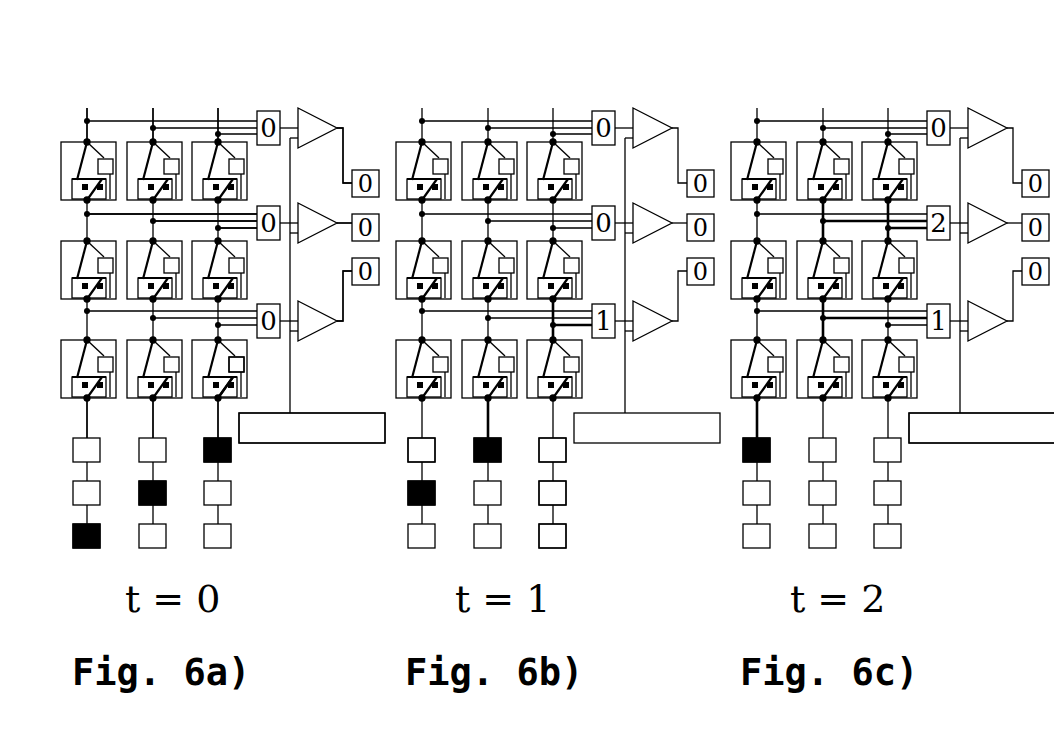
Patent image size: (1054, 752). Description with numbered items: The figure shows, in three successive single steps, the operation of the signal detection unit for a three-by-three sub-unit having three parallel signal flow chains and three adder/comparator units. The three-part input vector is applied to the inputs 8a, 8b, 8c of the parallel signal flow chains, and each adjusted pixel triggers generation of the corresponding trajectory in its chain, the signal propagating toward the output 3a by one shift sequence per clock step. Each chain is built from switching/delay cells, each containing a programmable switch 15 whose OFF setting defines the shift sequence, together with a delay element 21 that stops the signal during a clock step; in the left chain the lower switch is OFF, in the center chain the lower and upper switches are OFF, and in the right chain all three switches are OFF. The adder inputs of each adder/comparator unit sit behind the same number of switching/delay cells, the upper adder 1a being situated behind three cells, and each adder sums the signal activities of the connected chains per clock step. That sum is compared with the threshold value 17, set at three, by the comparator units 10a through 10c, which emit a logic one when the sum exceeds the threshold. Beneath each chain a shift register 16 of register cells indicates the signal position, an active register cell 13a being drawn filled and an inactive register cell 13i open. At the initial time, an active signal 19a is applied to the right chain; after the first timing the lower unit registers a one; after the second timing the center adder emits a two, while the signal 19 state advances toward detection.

In FIG. 6A, the output of the left signal flow chain 3a is at (217, 106).
In FIG. 6A, the upper adder 1a is at (288, 215).
In FIG. 6A, the upper comparator unit 10a is at (346, 208).
In FIG. 6A, the lower comparator unit 10c is at (344, 296).
In FIG. 6A, the input of the left signal flow chain 8a is at (68, 418).
In FIG. 6A, the input of the center signal flow chain 8b is at (143, 418).
In FIG. 6A, the input of the right signal flow chain 8c is at (208, 418).
In FIG. 6A, the delay element 21 is at (253, 362).
In FIG. 6A, the programmable switch 15 is at (243, 373).
In FIG. 6A, the threshold value 17 is at (312, 428).
In FIG. 6A, the active register cell 13a is at (108, 540).
In FIG. 6B, the inactive register cell 13i is at (386, 474).
In FIG. 6B, the shift register 16 is at (588, 493).
In FIG. 6C, the active signal 19a is at (730, 462).
In FIG. 6C, the signal active/inactive 19 is at (981, 450).